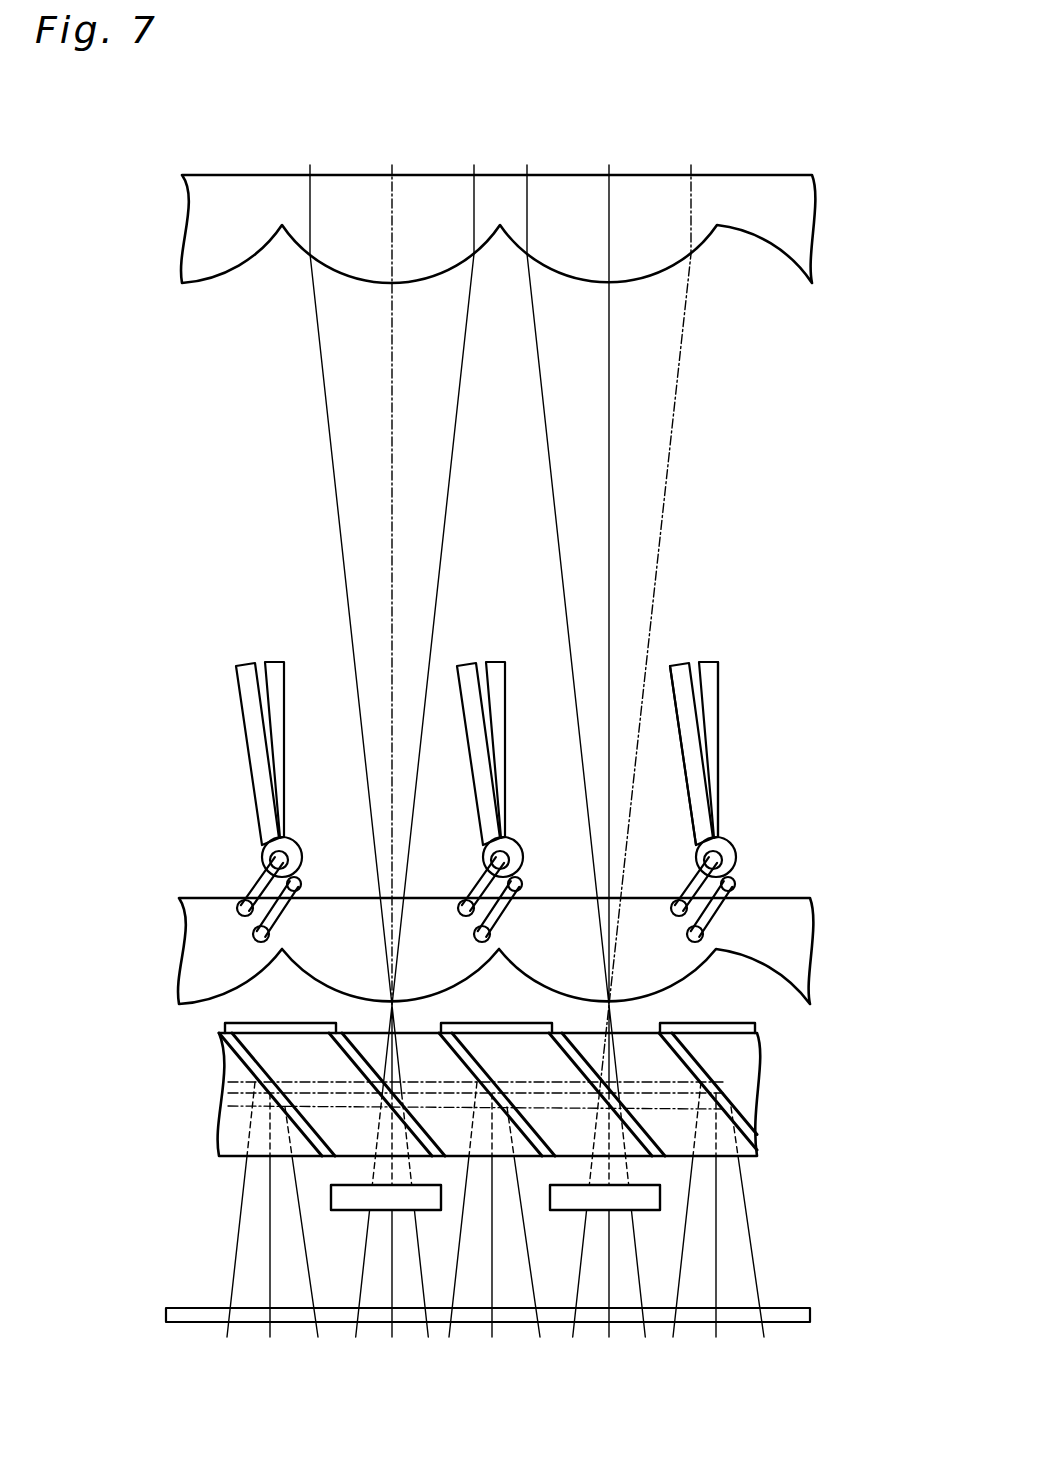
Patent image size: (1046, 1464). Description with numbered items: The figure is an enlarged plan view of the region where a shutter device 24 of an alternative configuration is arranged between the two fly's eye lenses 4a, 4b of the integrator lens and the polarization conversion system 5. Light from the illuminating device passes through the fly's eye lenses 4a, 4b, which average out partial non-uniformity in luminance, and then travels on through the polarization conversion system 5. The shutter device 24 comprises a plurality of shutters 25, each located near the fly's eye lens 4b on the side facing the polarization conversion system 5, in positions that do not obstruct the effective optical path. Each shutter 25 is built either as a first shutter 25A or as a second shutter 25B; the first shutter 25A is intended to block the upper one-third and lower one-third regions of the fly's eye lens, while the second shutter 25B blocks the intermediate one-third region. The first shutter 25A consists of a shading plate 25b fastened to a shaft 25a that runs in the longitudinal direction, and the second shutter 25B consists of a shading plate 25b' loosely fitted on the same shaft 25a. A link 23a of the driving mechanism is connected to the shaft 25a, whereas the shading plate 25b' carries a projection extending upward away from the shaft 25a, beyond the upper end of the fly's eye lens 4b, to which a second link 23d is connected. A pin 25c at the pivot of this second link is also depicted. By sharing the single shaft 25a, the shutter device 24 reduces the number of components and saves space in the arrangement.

The fly's eye lens 4a is at (812, 236).
The fly's eye lens 4b is at (808, 956).
The polarization conversion system 5 is at (757, 1086).
The shutter device 24 is at (768, 638).
The shutter 25 is at (695, 767).
The first shutter 25A is at (456, 754).
The second shutter 25B is at (531, 750).
The shaft 25a is at (719, 861).
The shading plate 25b is at (674, 731).
The shading plate 25b' is at (746, 749).
The pin 25c is at (735, 887).
The link 23a is at (692, 888).
The second link 23d is at (710, 917).